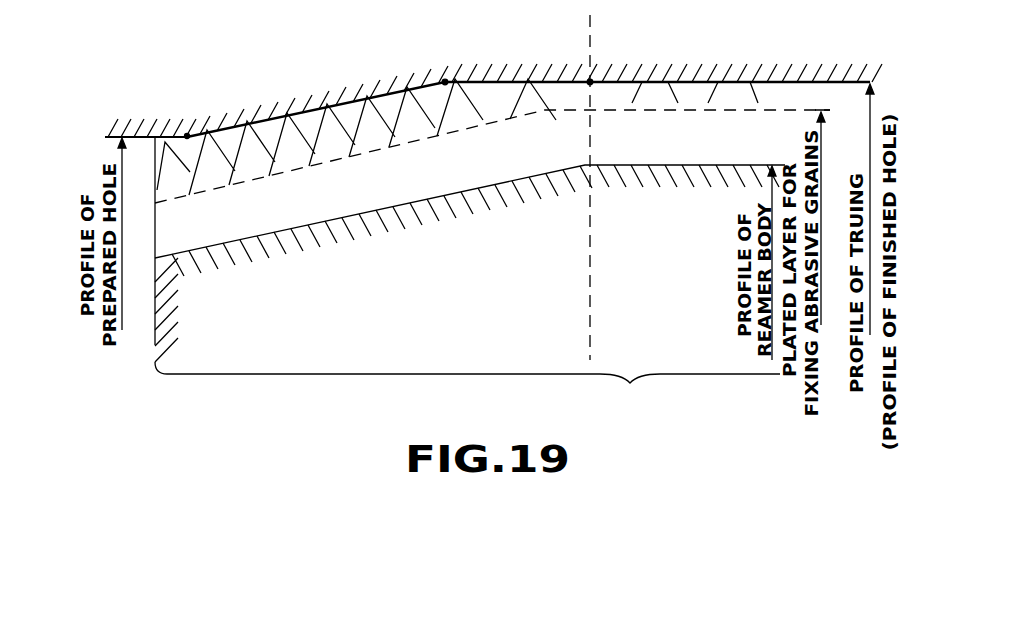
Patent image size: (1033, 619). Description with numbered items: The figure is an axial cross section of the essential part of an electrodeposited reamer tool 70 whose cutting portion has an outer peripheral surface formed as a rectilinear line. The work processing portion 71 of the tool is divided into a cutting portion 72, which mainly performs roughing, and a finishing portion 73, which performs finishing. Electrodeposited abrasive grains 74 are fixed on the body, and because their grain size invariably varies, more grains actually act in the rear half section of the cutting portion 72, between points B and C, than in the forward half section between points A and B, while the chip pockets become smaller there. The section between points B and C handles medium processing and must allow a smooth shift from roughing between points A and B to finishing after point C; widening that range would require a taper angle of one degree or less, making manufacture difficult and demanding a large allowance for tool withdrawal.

The electrodeposited reamer tool 70 is at (148, 343).
The work processing portion 71 is at (470, 288).
The cutting portion 72 is at (387, 314).
The finishing portion 73 is at (665, 314).
The electrodeposited abrasive grains 74 is at (277, 118).
The point A is at (185, 136).
The point B is at (446, 80).
The point C is at (588, 80).